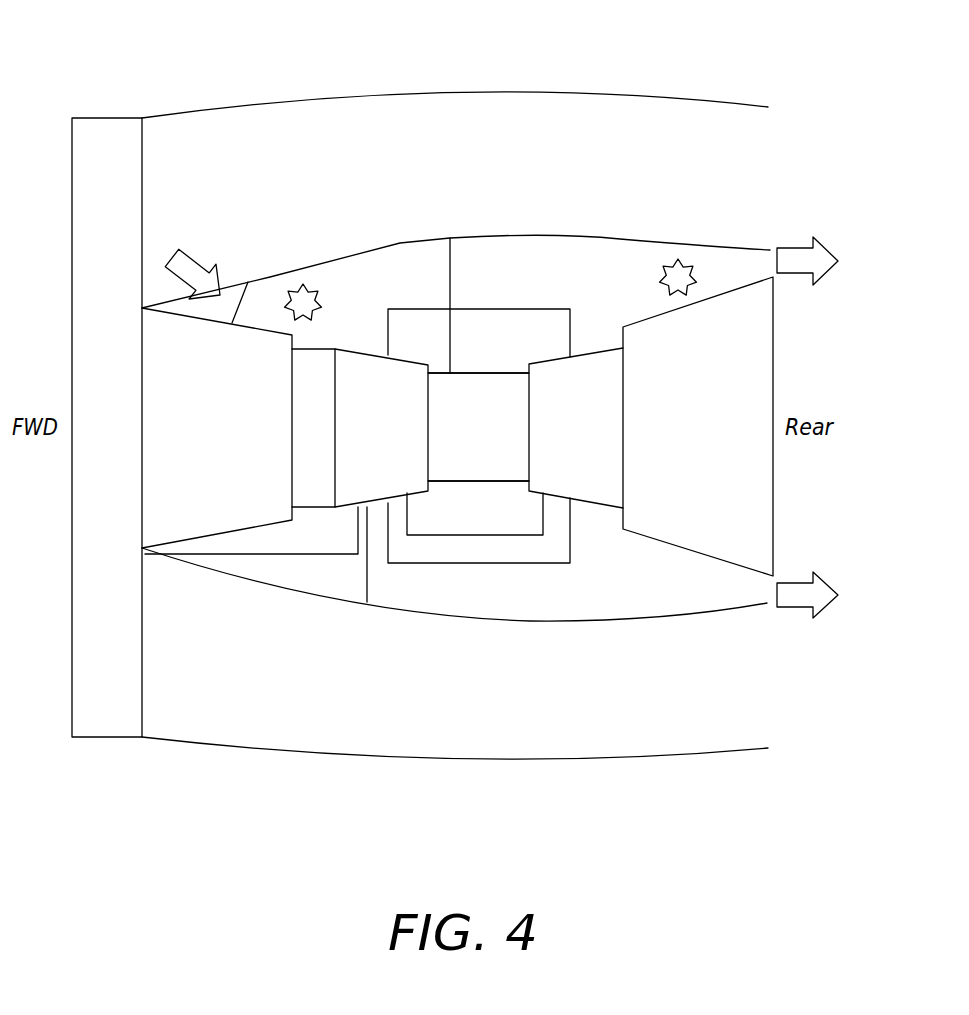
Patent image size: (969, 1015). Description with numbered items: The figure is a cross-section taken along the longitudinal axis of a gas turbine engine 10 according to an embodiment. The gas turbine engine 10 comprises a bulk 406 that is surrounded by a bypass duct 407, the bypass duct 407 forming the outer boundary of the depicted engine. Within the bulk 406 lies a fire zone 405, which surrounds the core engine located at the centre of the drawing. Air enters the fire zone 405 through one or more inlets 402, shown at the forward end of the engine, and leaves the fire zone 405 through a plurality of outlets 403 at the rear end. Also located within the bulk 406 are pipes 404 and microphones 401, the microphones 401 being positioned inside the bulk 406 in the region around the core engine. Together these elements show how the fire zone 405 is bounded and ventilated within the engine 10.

The gas turbine engine 10 is at (365, 97).
The microphones 401 is at (647, 263).
The inlets 402 is at (192, 261).
The outlets 403 is at (830, 427).
The pipes 404 is at (358, 572).
The fire zone 405 is at (618, 583).
The bulk 406 is at (693, 242).
The bypass duct 407 is at (530, 118).